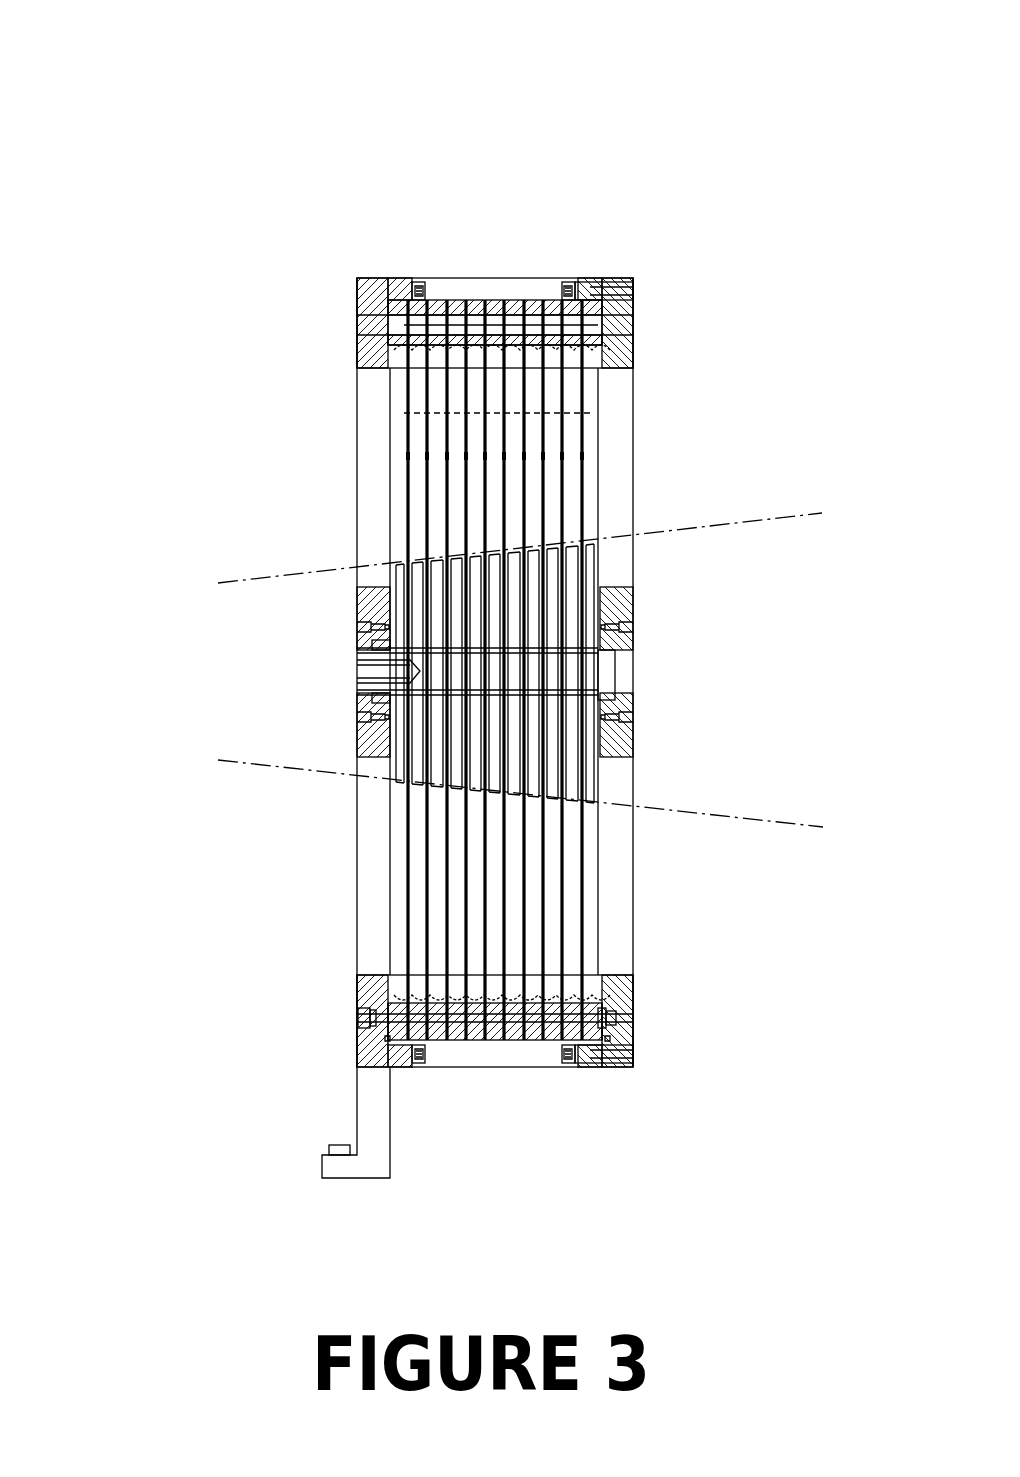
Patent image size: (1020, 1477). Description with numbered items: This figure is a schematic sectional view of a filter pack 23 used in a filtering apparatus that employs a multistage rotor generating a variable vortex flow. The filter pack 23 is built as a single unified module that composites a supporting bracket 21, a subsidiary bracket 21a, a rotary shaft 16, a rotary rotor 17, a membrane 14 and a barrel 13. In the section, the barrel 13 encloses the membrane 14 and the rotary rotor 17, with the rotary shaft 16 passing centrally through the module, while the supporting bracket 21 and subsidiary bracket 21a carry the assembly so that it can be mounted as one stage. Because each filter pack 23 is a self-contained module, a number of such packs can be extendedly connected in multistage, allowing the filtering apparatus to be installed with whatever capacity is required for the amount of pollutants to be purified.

The barrel 13 is at (480, 298).
The membrane 14 is at (580, 387).
The rotary shaft 16 is at (395, 673).
The rotary rotor 17 is at (592, 557).
The supporting bracket 21 is at (390, 1130).
The subsidiary bracket 21a is at (625, 996).
The filter pack 23 is at (618, 212).